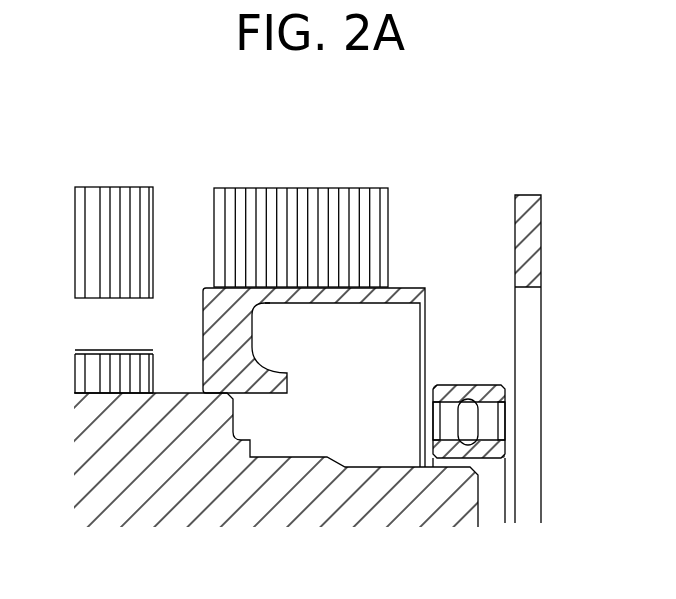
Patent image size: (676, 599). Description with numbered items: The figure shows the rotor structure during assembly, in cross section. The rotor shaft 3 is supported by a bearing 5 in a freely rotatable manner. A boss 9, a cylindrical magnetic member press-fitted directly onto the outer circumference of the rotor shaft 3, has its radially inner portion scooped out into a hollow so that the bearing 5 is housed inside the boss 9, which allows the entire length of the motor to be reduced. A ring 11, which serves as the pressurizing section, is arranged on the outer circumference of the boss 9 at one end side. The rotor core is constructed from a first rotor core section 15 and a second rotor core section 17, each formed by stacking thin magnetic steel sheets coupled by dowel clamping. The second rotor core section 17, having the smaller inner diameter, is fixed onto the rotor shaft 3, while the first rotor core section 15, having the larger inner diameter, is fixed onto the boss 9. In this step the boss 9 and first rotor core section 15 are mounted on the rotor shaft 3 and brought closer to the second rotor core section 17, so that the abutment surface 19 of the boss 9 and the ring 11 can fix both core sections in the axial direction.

The rotor shaft 3 is at (330, 503).
The bearing 5 is at (500, 467).
The boss 9 is at (398, 335).
The ring 11 is at (541, 313).
The first rotor core section 15 is at (283, 218).
The second rotor core section 17 is at (115, 217).
The abutment surface 19 is at (197, 300).